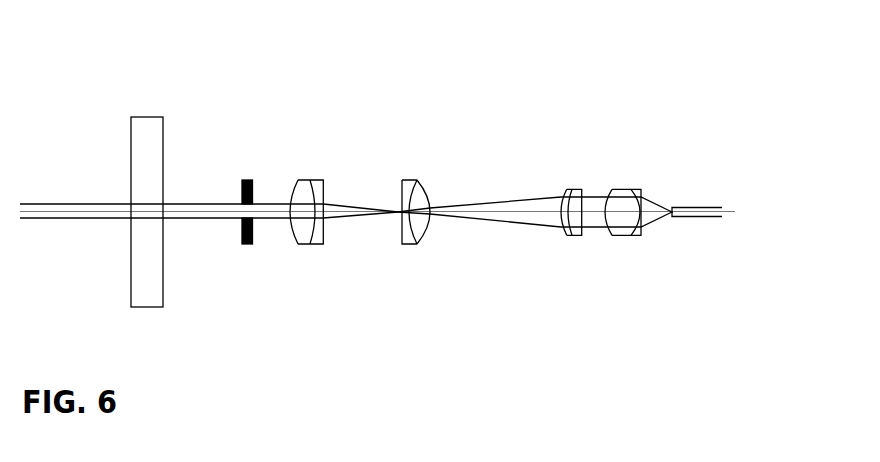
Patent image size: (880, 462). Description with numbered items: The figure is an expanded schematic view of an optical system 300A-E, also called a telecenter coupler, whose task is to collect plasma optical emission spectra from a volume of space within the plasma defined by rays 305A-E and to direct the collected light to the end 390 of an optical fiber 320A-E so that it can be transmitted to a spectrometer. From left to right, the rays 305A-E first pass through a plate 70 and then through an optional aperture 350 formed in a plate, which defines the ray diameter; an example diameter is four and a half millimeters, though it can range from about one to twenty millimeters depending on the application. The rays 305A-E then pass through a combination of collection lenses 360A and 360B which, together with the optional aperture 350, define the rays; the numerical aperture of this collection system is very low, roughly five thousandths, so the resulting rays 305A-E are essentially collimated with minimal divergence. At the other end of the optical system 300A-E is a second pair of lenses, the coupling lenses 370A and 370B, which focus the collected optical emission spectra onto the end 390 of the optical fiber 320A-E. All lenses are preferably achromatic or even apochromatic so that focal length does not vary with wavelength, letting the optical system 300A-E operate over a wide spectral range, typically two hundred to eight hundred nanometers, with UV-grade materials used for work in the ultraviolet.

The optical system 300A-E is at (112, 55).
The rays 305A-E is at (75, 220).
The window 70 is at (163, 285).
The aperture 350 is at (247, 180).
The collection lens 360A is at (317, 180).
The collection lens 360B is at (417, 180).
The coupling lens 370A is at (573, 189).
The coupling lens 370B is at (638, 189).
The end of optical fiber 390 is at (671, 214).
The optical fiber 320A-E is at (692, 203).